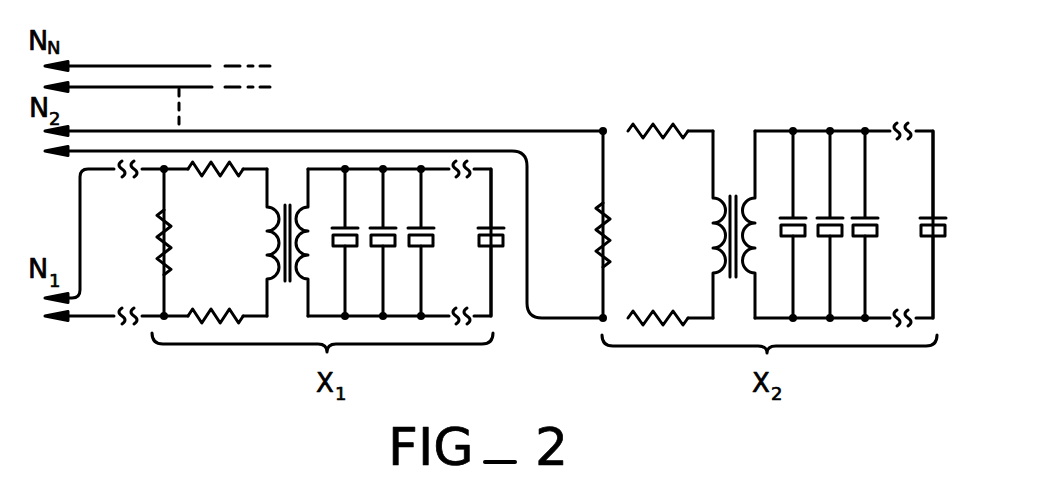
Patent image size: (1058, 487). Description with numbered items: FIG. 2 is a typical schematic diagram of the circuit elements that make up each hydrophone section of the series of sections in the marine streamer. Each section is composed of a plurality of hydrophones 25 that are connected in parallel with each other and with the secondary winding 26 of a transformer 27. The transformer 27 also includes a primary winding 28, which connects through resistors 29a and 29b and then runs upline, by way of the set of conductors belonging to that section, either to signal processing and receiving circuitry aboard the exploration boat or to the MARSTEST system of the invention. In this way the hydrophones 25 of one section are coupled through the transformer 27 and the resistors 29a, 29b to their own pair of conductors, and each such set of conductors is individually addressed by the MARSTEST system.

The hydrophones 25 is at (357, 223).
The secondary winding 26 is at (300, 205).
The transformer 27 is at (287, 280).
The primary winding 28 is at (273, 205).
The resistor 29a is at (168, 239).
The resistor 29b is at (216, 168).